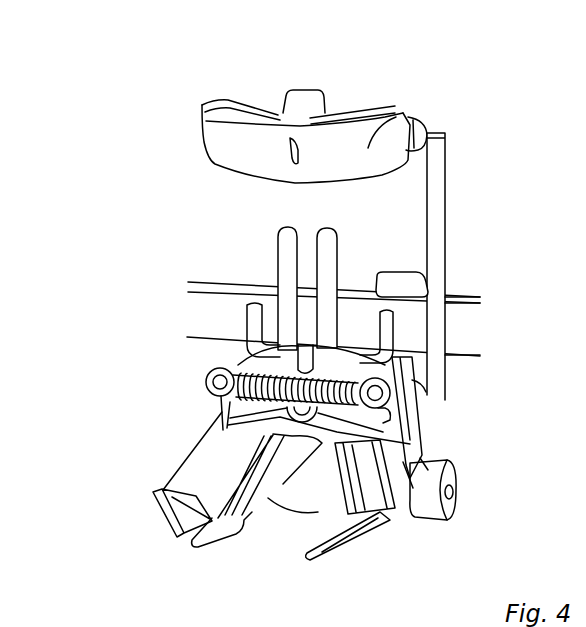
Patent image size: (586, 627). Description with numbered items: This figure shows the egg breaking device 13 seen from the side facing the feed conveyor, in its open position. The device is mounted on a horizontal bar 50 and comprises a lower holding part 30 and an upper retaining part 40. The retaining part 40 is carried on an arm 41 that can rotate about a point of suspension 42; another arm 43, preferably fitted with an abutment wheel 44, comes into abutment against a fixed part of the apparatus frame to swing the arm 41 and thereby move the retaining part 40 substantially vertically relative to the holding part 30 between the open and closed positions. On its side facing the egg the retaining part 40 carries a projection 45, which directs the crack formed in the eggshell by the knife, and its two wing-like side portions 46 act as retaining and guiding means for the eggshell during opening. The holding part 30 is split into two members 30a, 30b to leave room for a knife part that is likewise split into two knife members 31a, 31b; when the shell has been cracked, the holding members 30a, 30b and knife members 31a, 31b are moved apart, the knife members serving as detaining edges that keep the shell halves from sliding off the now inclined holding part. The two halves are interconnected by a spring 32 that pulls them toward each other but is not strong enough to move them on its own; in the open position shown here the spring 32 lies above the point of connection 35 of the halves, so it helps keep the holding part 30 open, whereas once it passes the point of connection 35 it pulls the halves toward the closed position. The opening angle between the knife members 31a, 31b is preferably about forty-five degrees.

The egg breaking device 13 is at (120, 283).
The holding part 30 is at (155, 463).
The holding part member 30a is at (160, 514).
The holding part member 30b is at (388, 525).
The knife member 31a is at (221, 540).
The knife member 31b is at (320, 558).
The spring 32 is at (230, 399).
The point of connection 35 is at (235, 418).
The retaining part 40 is at (424, 87).
The arm 41 is at (437, 222).
The point of suspension 42 is at (428, 388).
The arm 43 is at (411, 412).
The abutment wheel 44 is at (428, 512).
The projection 45 is at (298, 146).
The wing-like side portions 46 is at (244, 146).
The horizontal bar 50 is at (206, 305).